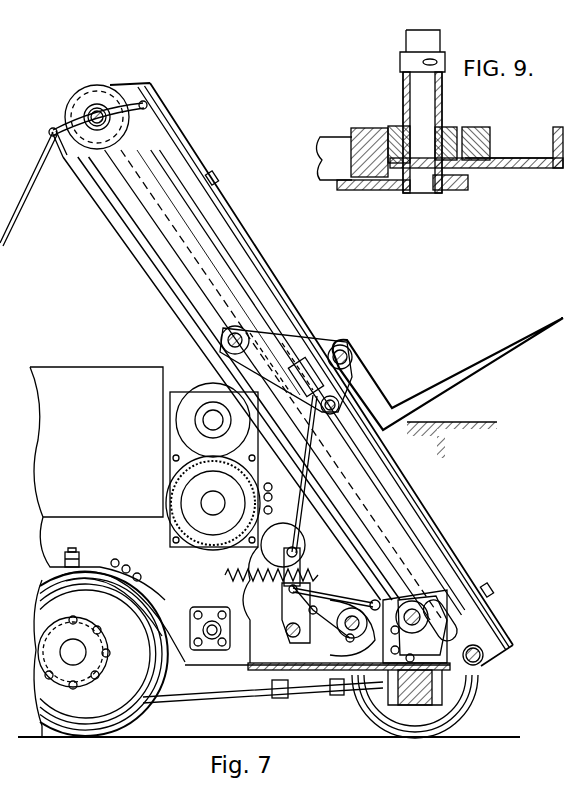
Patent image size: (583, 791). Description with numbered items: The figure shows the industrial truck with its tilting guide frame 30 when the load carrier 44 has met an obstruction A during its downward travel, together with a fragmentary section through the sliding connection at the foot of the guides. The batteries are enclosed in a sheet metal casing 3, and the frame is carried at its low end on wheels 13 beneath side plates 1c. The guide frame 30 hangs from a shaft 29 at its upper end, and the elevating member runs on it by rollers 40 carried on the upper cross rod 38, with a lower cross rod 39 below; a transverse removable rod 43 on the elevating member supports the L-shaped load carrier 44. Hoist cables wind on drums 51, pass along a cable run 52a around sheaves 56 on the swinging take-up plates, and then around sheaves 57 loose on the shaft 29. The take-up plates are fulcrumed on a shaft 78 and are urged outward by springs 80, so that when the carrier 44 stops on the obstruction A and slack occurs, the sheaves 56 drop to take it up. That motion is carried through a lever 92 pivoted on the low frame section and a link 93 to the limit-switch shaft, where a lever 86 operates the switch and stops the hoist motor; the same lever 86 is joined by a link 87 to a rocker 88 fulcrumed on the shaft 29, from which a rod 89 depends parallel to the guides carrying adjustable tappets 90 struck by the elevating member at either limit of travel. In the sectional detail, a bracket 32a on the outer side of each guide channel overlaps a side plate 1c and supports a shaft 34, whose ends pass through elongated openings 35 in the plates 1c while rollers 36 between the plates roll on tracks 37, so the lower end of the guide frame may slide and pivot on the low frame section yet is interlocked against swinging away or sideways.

In FIG. 7, the sheet metal casing 3 is at (96, 442).
In FIG. 7, the shaft 29 is at (100, 108).
In FIG. 7, the sheave 57 is at (78, 96).
In FIG. 7, the rocker 88 is at (50, 128).
In FIG. 7, the link 87 is at (108, 214).
In FIG. 7, the adjustable tappet 90 is at (216, 178).
In FIG. 7, the rod 89 is at (226, 206).
In FIG. 7, the guide frame 30 is at (292, 306).
In FIG. 9, the guide frame 30 is at (555, 136).
In FIG. 7, the roller 40 is at (226, 332).
In FIG. 7, the transverse removable rod 43 is at (350, 357).
In FIG. 7, the load carrier 44 is at (448, 374).
In FIG. 7, the lower cross rod 39 is at (320, 420).
In FIG. 7, the obstruction A is at (436, 422).
In FIG. 7, the drum 51 is at (166, 500).
In FIG. 7, the cable run 52a is at (263, 545).
In FIG. 7, the lever 86 is at (300, 550).
In FIG. 7, the spring 80 is at (271, 584).
In FIG. 7, the link 93 is at (282, 600).
In FIG. 7, the sheave 56 is at (347, 598).
In FIG. 7, the shaft 78 is at (284, 645).
In FIG. 7, the lever 92 is at (407, 627).
In FIG. 7, the shaft 34 is at (418, 604).
In FIG. 9, the shaft 34 is at (410, 89).
In FIG. 7, the upper cross rod 38 is at (433, 607).
In FIG. 9, the upper cross rod 38 is at (399, 144).
In FIG. 7, the opening 35 is at (447, 622).
In FIG. 9, the opening 35 is at (455, 192).
In FIG. 7, the track 37 is at (484, 648).
In FIG. 9, the track 37 is at (378, 118).
In FIG. 9, the wheel 13 is at (336, 138).
In FIG. 9, the roller 36 is at (450, 132).
In FIG. 9, the bracket 32a is at (528, 170).
In FIG. 9, the side plate 1c is at (362, 192).